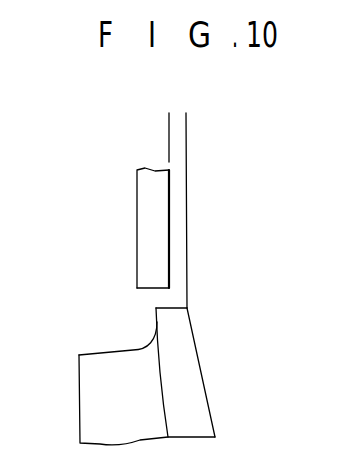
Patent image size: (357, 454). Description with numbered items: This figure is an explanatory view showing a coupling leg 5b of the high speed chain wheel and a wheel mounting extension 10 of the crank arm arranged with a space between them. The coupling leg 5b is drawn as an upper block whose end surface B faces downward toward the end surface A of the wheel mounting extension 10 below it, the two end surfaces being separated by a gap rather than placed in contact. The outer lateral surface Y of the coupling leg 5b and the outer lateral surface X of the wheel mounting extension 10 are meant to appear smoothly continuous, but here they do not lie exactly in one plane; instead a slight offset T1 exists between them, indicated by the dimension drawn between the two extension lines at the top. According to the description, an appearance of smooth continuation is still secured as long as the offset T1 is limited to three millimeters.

The coupling leg 5b is at (143, 196).
The wheel mounting extension 10 is at (203, 400).
The outer lateral surface of the coupling leg Y is at (172, 249).
The end surface of the wheel mounting extension A is at (172, 305).
The end surface of the coupling leg B is at (148, 291).
The outer lateral surface of the wheel mounting extension X is at (195, 348).
The offset T1 is at (140, 127).